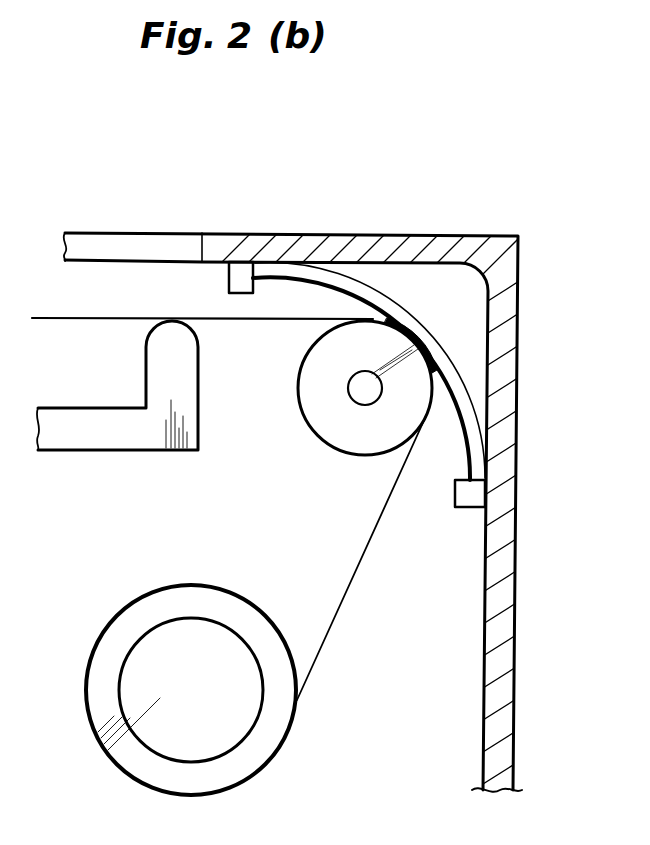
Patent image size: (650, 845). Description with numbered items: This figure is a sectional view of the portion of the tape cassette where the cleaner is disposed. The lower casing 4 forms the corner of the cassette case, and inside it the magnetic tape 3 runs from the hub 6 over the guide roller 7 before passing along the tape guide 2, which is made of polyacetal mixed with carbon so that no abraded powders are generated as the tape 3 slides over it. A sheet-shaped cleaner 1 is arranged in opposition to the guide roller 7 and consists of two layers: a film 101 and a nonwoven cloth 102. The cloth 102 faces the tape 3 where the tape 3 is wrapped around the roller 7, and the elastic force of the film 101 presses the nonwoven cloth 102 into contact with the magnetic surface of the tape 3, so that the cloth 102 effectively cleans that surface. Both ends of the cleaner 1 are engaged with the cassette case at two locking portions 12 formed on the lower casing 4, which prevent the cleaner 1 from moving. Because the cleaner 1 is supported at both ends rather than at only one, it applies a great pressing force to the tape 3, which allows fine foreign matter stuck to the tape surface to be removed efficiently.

The cleaner 1 is at (458, 380).
The tape guide 2 is at (142, 430).
The magnetic tape 3 is at (352, 590).
The lower casing 4 is at (422, 244).
The hub 6 is at (235, 718).
The guide roller 7 is at (328, 422).
The locking portions 12 is at (242, 277).
The film 101 is at (373, 292).
The nonwoven cloth 102 is at (387, 327).